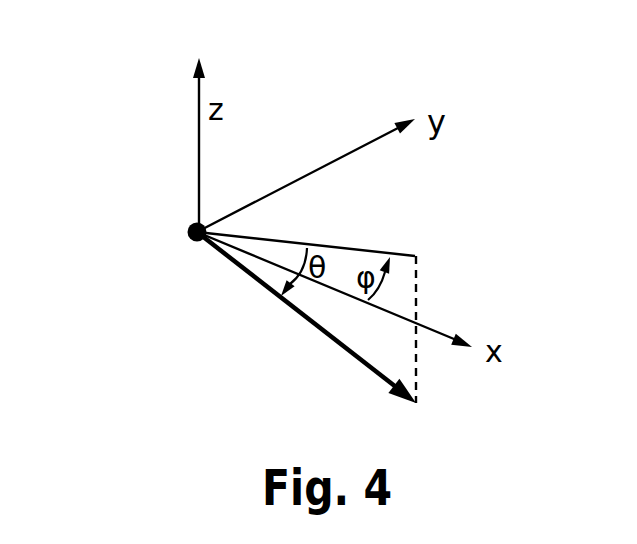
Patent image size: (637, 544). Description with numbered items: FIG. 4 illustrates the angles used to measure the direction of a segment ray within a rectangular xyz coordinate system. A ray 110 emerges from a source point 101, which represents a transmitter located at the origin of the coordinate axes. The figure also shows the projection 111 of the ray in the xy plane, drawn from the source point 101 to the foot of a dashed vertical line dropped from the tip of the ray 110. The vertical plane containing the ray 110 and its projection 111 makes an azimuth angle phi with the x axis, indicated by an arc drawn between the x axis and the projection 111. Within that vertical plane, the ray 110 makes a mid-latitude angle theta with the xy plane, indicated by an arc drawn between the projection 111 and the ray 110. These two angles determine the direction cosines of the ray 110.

The source point 101 is at (187, 224).
The ray 110 is at (358, 358).
The projection of the ray 111 is at (333, 243).